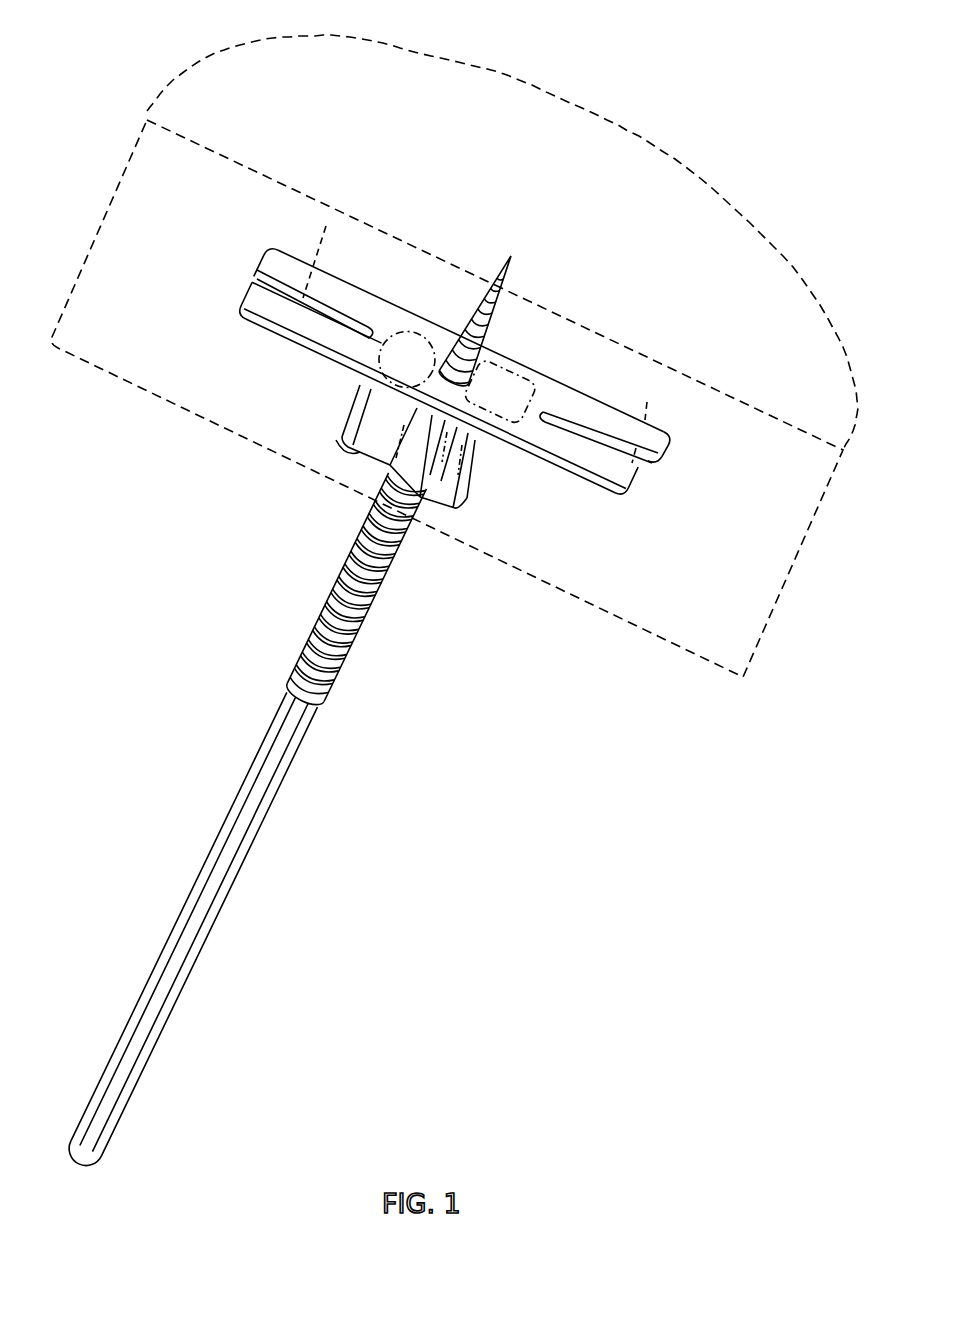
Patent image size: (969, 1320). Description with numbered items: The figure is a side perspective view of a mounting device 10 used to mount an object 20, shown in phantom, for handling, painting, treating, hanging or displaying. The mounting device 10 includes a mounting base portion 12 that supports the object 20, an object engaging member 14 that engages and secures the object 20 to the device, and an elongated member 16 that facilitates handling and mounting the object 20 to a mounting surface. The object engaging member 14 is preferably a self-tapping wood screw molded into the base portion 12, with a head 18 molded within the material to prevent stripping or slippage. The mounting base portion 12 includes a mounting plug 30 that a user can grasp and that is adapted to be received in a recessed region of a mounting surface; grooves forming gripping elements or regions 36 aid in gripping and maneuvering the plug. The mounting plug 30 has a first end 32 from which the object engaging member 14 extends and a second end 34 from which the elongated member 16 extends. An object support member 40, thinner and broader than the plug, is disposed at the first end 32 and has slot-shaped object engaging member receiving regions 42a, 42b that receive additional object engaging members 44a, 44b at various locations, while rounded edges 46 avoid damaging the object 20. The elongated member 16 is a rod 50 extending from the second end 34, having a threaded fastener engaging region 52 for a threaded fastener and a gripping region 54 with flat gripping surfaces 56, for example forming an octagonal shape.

The mounting device 10 is at (163, 592).
The mounting base portion 12 is at (438, 389).
The object engaging member 14 is at (481, 319).
The elongated member 16 is at (303, 697).
The head 18 is at (500, 478).
The object 20 is at (458, 62).
The mounting plug 30 is at (350, 408).
The first end 32 is at (454, 379).
The second end 34 is at (460, 525).
The gripping elements or regions 36 is at (336, 443).
The object support member 40 is at (470, 340).
The object engaging member receiving region 42a is at (660, 448).
The object engaging member receiving region 42b is at (266, 263).
The additional object engaging member 44a is at (653, 402).
The additional object engaging member 44b is at (326, 224).
The rounded edges 46 is at (430, 406).
The rod 50 is at (356, 586).
The fastener engaging region 52 is at (337, 578).
The gripping region 54 is at (194, 923).
The flat gripping surfaces 56 is at (190, 932).